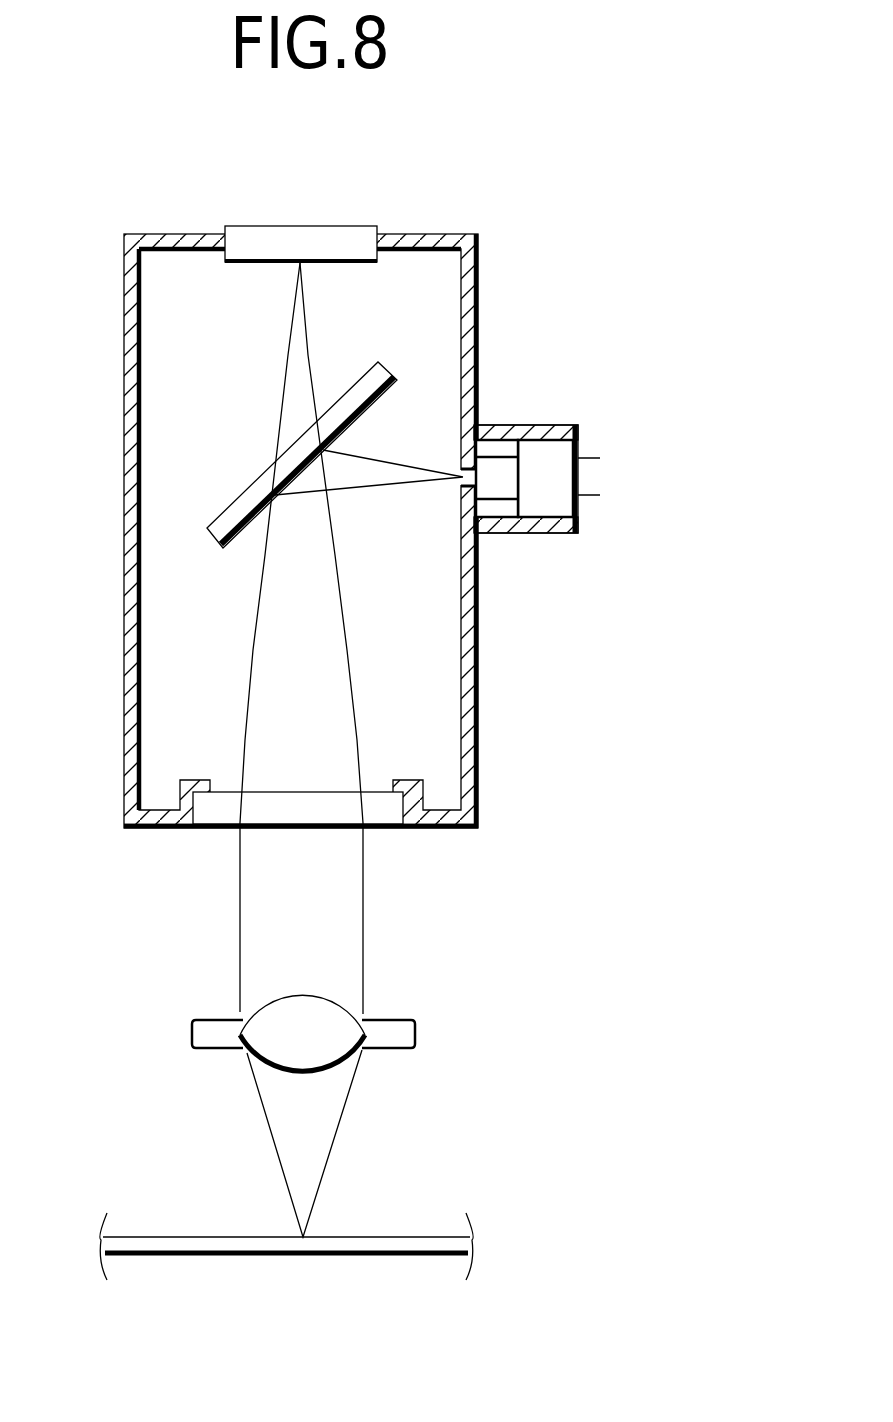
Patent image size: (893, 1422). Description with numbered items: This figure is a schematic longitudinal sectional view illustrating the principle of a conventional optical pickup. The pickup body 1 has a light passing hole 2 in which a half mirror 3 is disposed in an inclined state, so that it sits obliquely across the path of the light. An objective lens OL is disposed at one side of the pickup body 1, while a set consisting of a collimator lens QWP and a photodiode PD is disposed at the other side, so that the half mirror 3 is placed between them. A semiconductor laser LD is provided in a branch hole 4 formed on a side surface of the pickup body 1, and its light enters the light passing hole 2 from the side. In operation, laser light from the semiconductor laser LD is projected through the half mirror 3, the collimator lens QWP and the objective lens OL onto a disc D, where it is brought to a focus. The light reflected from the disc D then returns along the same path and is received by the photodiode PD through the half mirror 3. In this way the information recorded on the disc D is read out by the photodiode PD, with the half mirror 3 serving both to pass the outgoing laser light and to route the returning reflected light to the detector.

The pickup body 1 is at (124, 303).
The light passing hole 2 is at (215, 355).
The half mirror 3 is at (213, 548).
The branch hole 4 is at (497, 510).
The photodiode PD is at (318, 225).
The semiconductor laser LD is at (547, 467).
The collimator lens QWP is at (389, 813).
The objective lens OL is at (367, 1052).
The disc D is at (440, 1237).